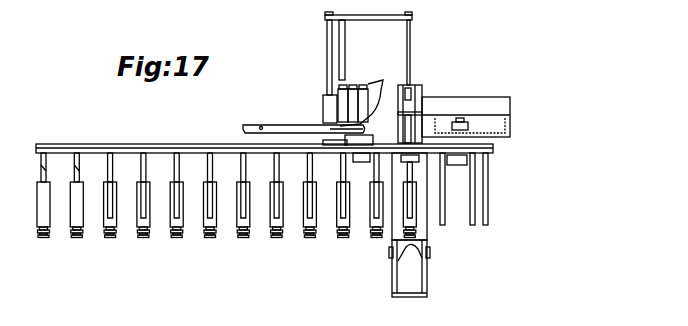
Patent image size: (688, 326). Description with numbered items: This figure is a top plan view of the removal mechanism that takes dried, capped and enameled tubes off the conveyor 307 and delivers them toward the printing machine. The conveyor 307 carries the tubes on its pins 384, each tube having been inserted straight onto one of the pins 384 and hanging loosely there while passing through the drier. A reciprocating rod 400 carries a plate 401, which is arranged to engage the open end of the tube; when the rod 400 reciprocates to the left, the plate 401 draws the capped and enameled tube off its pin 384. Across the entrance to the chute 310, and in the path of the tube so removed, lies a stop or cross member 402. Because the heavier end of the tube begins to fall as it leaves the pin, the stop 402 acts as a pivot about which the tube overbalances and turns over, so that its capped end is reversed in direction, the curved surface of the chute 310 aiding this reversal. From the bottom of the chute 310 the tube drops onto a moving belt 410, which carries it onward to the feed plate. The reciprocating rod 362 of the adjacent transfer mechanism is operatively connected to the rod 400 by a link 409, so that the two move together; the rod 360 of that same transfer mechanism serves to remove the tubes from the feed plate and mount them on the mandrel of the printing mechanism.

The conveyor 307 is at (154, 144).
The chute 310 is at (392, 291).
The rod 360 is at (347, 58).
The reciprocating rod 362 is at (327, 60).
The pins 384 is at (493, 210).
The reciprocating rod 400 is at (411, 36).
The plate 401 is at (402, 160).
The stop or cross member 402 is at (415, 253).
The link 409 is at (377, 20).
The belt 410 is at (414, 87).